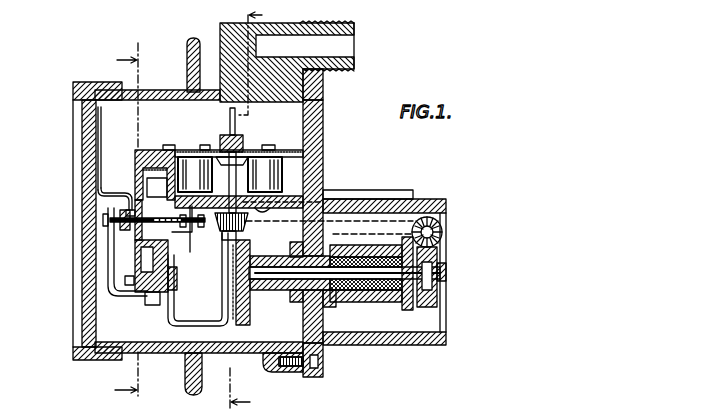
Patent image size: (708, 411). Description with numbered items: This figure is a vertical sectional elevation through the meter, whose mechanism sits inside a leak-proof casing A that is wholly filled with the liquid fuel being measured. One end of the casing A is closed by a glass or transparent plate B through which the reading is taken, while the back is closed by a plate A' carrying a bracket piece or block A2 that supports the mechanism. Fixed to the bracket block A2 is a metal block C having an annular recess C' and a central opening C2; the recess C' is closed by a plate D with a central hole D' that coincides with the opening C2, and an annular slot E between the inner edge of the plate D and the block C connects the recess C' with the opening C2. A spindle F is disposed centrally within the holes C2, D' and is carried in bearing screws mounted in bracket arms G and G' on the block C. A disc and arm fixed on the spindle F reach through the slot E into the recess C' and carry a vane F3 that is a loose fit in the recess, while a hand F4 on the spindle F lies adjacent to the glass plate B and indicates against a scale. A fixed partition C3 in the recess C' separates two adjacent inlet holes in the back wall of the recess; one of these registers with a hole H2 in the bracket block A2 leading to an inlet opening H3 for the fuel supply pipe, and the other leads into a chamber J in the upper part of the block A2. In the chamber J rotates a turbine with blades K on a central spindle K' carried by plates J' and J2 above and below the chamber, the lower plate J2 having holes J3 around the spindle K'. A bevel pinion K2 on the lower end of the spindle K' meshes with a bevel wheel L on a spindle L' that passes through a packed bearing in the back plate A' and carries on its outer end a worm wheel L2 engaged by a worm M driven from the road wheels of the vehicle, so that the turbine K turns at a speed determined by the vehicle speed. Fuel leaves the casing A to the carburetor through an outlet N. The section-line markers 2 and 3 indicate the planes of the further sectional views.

The casing A is at (224, 60).
The plate A' is at (337, 84).
The bracket piece A2 is at (324, 162).
The transparent plate B is at (84, 134).
The metal block C is at (88, 270).
The annular recess C' is at (88, 259).
The central opening C2 is at (146, 231).
The fixed partition C3 is at (146, 186).
The plate D is at (81, 175).
The central hole D' is at (83, 207).
The annular slot E is at (146, 193).
The spindle F is at (142, 150).
The vane F3 is at (146, 257).
The hand F4 is at (100, 123).
The bracket arm G is at (81, 278).
The bracket arm G' is at (187, 237).
The hole H2 is at (378, 204).
The inlet opening H3 is at (399, 209).
The chamber J is at (265, 187).
The plate J' is at (233, 96).
The plate J2 is at (262, 212).
The holes J3 is at (330, 196).
The turbine blades K is at (296, 160).
The central spindle K' is at (292, 133).
The bevel pinion K2 is at (222, 237).
The bevel wheel L is at (253, 325).
The spindle L' is at (347, 315).
The worm wheel L2 is at (437, 301).
The worm M is at (437, 229).
The outlet N is at (338, 43).
The section line 2- 2 is at (135, 214).
The section line 3- 3 is at (246, 206).